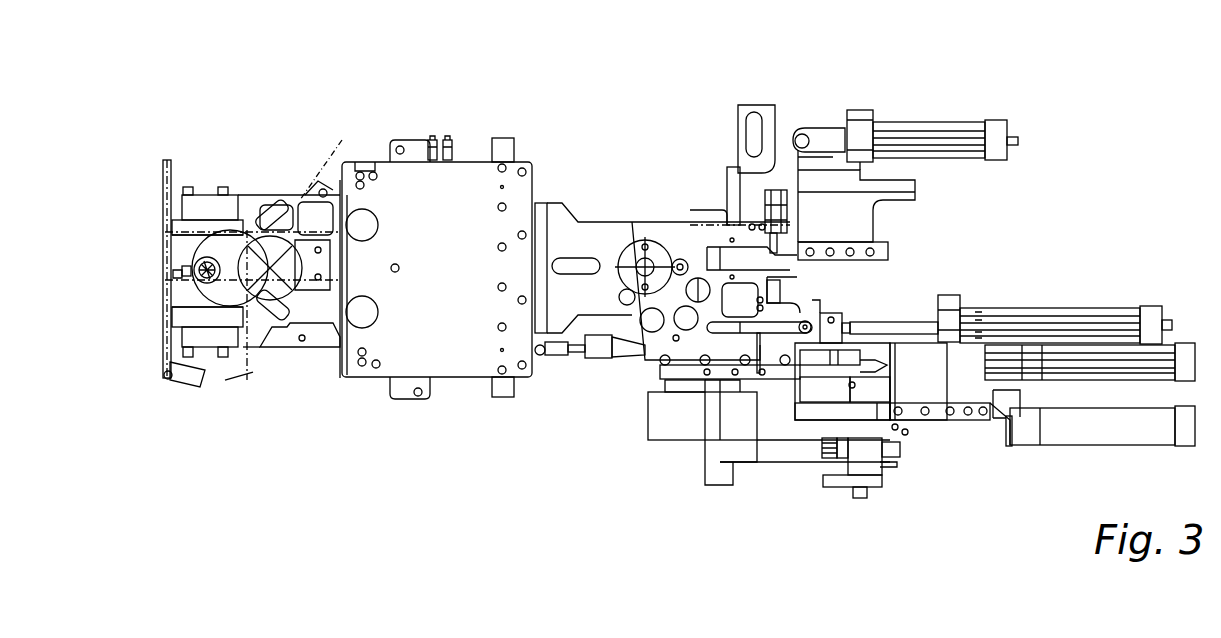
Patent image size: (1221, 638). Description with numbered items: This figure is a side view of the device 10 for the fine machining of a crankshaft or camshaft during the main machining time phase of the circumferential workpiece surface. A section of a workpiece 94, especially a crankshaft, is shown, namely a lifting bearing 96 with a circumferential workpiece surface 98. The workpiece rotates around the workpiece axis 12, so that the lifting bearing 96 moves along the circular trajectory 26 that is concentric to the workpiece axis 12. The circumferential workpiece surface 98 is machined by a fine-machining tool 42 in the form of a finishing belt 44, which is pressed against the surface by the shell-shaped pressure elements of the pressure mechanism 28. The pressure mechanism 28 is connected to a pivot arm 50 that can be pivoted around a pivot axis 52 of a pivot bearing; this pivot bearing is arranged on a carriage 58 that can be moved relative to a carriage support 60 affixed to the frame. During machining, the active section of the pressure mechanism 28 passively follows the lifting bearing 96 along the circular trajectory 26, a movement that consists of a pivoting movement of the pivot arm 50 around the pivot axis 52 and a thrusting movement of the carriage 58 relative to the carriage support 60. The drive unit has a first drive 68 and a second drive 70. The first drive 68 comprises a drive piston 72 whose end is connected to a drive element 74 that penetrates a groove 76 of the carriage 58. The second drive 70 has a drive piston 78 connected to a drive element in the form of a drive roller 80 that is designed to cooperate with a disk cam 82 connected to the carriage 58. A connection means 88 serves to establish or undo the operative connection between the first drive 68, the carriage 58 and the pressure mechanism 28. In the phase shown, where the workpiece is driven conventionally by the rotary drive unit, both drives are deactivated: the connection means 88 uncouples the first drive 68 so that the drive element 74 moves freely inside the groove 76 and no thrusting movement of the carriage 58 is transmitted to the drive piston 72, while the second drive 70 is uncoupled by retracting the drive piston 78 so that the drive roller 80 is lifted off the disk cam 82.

The device 10 is at (651, 80).
The workpiece axis 12 is at (260, 386).
The circular trajectory 26 is at (258, 385).
The pressure mechanism 28 is at (406, 104).
The fine-machining tool 42 is at (178, 416).
The finishing belt 44 is at (178, 382).
The pivot arm 50 is at (597, 218).
The pivot axis 52 is at (646, 262).
The carriage 58 is at (648, 348).
The carriage support 60 is at (667, 432).
The first drive 68 is at (1100, 312).
The second drive 70 is at (962, 118).
The drive piston 72 is at (922, 328).
The drive element 74 is at (800, 335).
The groove 76 is at (757, 330).
The drive piston 78 is at (850, 132).
The drive roller 80 is at (795, 126).
The disk cam 82 is at (772, 127).
The connection means 88 is at (838, 300).
The workpiece 94 is at (165, 270).
The lifting bearing 96 is at (206, 256).
The circumferential workpiece surface 98 is at (174, 275).